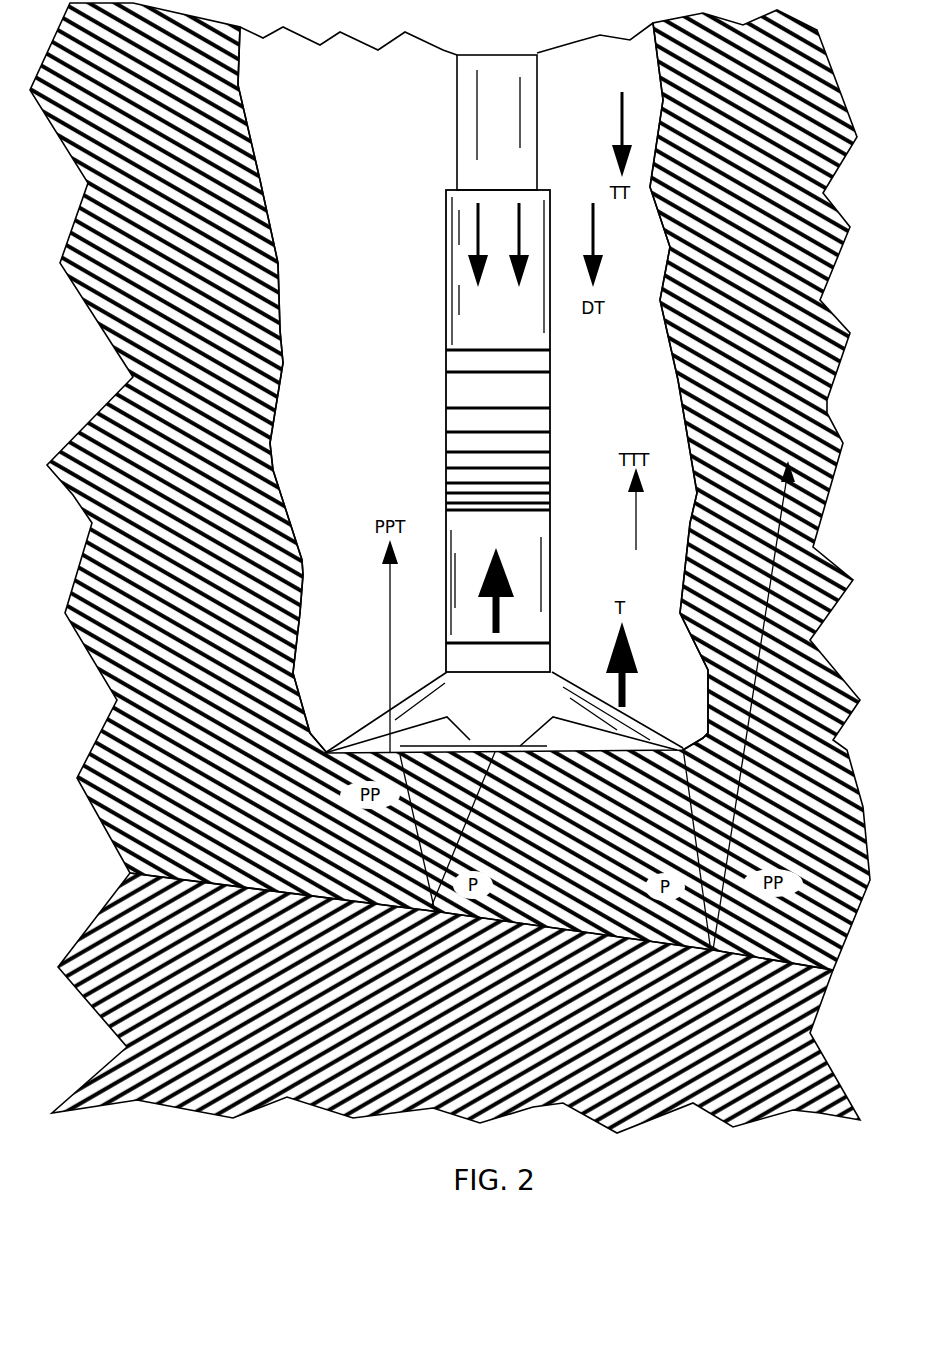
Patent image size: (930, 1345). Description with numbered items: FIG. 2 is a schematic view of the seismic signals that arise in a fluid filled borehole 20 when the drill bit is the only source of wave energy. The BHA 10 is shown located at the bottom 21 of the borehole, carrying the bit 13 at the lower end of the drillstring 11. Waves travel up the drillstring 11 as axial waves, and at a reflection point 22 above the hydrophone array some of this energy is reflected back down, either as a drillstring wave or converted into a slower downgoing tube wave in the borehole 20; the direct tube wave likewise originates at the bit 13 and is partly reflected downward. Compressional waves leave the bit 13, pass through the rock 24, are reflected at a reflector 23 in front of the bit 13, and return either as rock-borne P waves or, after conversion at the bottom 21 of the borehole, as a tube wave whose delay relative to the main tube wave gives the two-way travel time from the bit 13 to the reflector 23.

The BHA 10 is at (497, 404).
The drillstring 11 is at (457, 130).
The bit 13 is at (362, 727).
The borehole 20 is at (328, 305).
The bottom of the borehole 21 is at (607, 752).
The reflection point 22 is at (450, 190).
The reflector 23 is at (620, 942).
The rock 24 is at (281, 906).